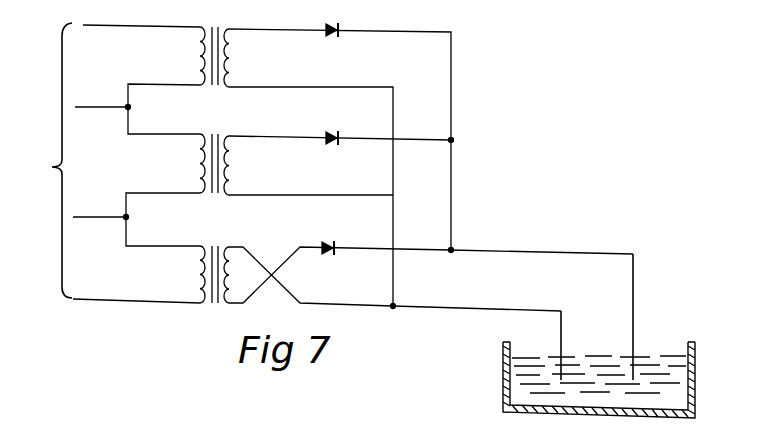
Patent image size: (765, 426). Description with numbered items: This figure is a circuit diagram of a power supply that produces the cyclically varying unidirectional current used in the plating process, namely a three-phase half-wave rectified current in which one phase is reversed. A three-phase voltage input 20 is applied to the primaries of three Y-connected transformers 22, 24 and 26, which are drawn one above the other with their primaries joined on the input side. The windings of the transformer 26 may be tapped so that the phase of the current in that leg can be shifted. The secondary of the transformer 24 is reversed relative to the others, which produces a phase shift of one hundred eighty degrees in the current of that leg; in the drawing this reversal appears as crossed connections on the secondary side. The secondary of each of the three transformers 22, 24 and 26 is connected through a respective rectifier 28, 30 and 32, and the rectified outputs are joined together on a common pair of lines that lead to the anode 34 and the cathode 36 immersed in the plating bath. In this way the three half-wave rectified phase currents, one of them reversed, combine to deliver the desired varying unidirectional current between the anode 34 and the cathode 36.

The three-phase voltage input 20 is at (49, 160).
The transformer 22 is at (213, 243).
The transformer 24 is at (213, 129).
The transformer 26 is at (218, 27).
The rectifier 28 is at (328, 241).
The rectifier 30 is at (332, 131).
The rectifier 32 is at (333, 21).
The anode 34 is at (563, 325).
The cathode 36 is at (634, 325).